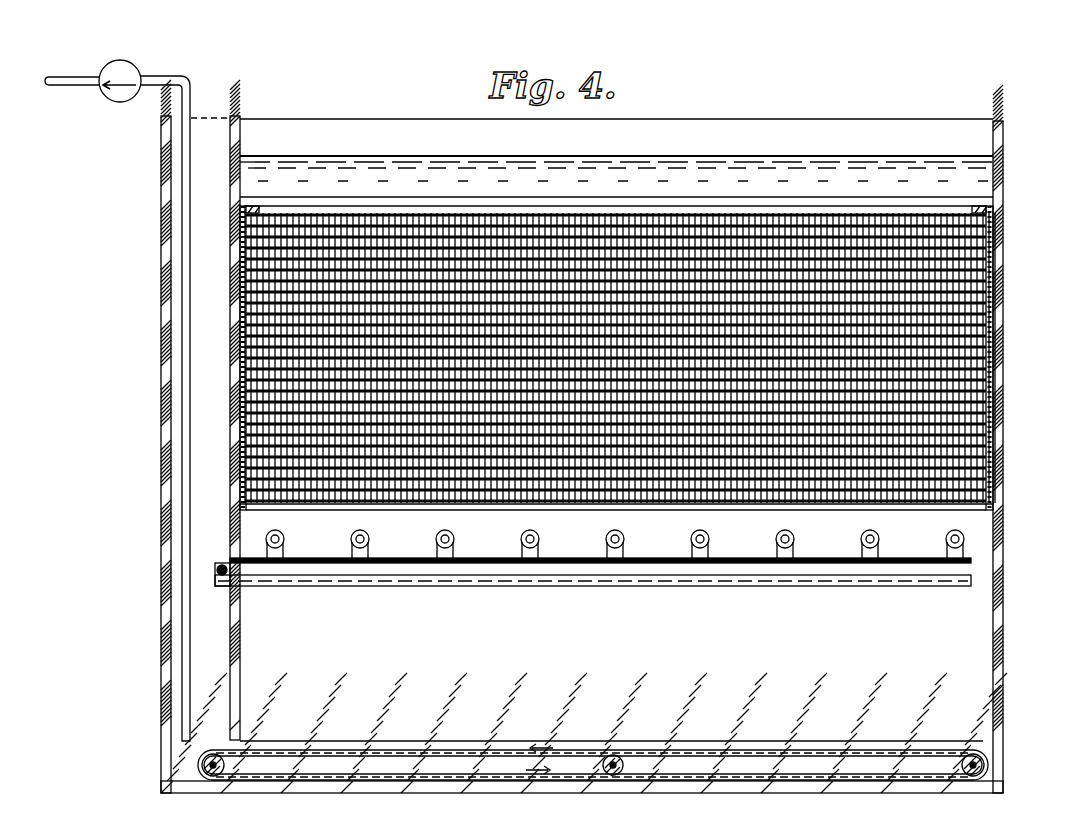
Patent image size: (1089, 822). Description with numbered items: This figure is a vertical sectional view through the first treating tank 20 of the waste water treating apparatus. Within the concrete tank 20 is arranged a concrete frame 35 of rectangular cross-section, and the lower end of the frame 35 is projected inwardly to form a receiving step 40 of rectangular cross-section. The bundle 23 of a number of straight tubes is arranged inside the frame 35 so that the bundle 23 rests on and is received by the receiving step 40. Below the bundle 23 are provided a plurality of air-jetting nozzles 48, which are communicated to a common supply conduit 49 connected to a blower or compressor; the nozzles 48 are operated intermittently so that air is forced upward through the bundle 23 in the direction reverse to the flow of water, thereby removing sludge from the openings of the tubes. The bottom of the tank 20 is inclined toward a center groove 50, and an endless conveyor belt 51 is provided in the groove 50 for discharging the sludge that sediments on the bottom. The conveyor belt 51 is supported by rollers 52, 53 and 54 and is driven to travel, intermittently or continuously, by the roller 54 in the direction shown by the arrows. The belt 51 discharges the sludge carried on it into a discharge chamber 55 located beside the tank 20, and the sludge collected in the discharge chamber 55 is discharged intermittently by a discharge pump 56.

The first treating tank 20 is at (607, 436).
The bundle 23 is at (719, 265).
The frame 35 is at (995, 312).
The receiving step 40 is at (245, 502).
The air-jetting nozzles 48 is at (513, 534).
The common supply conduit 49 is at (583, 562).
The center groove 50 is at (593, 764).
The endless conveyor belt 51 is at (705, 745).
The roller 52 is at (966, 752).
The roller 53 is at (604, 752).
The roller 54 is at (219, 759).
The discharge chamber 55 is at (197, 659).
The discharge pump 56 is at (116, 94).